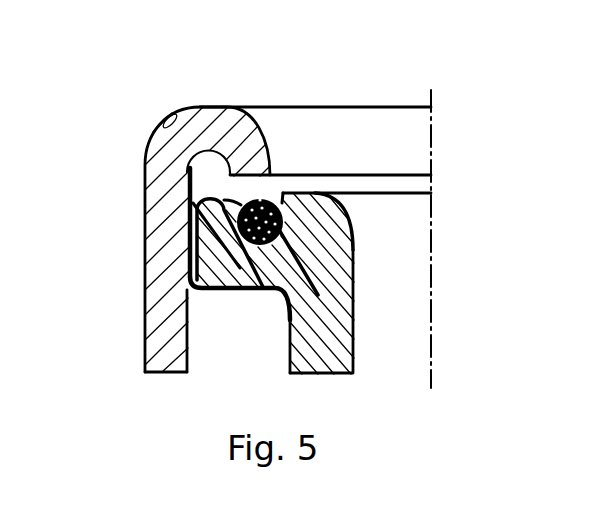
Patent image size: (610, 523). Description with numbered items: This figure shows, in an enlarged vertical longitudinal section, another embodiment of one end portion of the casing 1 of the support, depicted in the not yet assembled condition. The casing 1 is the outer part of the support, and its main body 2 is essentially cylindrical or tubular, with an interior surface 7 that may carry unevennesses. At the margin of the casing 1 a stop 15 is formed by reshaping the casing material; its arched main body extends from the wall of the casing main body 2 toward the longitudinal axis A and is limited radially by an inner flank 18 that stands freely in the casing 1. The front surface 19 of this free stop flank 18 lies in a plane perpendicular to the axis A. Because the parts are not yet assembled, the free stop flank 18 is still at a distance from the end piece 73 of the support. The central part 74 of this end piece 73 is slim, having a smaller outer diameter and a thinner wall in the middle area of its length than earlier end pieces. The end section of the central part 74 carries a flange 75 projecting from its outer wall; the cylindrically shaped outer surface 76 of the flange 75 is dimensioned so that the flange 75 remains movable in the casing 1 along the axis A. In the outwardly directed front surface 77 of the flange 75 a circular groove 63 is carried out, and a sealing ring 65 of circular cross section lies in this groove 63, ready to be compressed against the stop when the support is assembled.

The longitudinal axis A is at (431, 128).
The casing 1 is at (120, 299).
The main body of the casing 2 is at (137, 332).
The interior surface of the casing 7 is at (142, 368).
The stop 15 is at (166, 106).
The inner flank of the stop 18 is at (229, 130).
The front surface of the stop flank 19 is at (248, 188).
The circular groove 63 is at (283, 241).
The sealing ring 65 is at (287, 213).
The end piece 73 is at (287, 331).
The central part of the end piece 74 is at (337, 338).
The flange 75 is at (230, 291).
The outer surface of the flange 76 is at (222, 233).
The front surface of the flange 77 is at (377, 195).